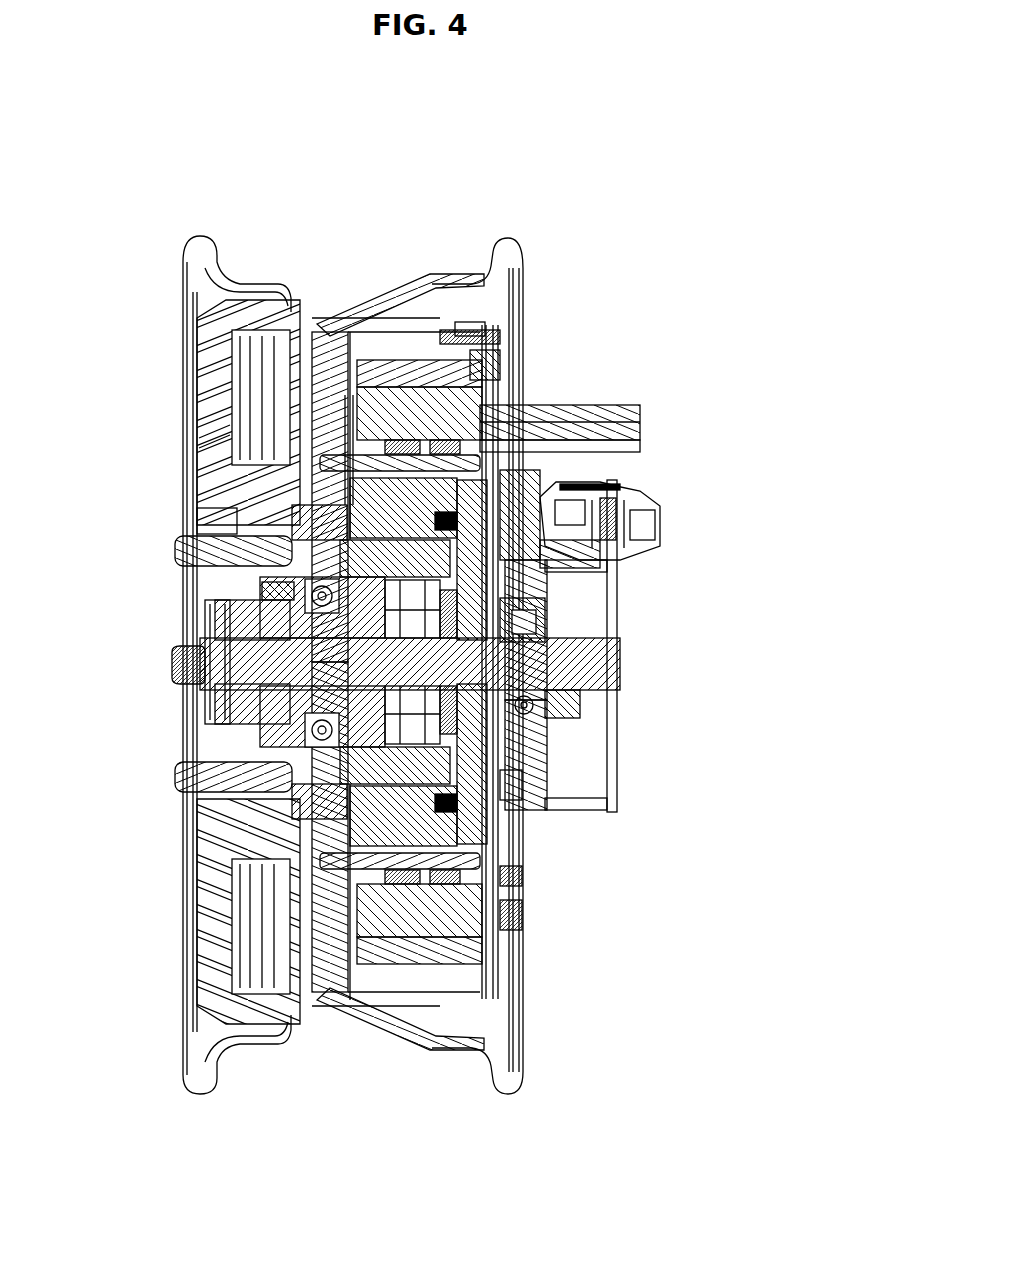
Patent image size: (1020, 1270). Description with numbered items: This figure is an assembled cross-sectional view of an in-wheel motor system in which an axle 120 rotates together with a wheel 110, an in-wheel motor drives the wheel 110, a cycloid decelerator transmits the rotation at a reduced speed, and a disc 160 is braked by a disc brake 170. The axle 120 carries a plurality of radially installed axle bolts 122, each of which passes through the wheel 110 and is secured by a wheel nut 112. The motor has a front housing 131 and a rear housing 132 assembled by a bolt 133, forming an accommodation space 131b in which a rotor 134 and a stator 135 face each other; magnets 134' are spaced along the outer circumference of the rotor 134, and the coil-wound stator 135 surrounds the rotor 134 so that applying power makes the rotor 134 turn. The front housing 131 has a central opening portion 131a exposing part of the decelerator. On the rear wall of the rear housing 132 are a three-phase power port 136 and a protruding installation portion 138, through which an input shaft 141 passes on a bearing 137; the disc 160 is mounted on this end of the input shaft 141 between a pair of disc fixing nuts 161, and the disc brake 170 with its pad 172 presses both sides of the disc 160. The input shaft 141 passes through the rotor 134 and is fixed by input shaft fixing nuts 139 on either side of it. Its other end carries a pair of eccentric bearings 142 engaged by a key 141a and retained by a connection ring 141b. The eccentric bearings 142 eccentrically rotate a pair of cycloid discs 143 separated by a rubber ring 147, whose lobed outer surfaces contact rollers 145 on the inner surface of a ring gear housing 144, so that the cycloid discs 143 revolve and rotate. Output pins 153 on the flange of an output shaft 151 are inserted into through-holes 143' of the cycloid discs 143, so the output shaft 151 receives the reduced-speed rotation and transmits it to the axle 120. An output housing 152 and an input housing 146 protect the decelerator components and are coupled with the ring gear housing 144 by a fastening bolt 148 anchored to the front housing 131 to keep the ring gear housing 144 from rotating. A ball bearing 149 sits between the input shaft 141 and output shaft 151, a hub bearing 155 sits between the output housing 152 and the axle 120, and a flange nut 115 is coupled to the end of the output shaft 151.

The wheel 110 is at (217, 350).
The wheel nut 112 is at (195, 530).
The flange nut 115 is at (290, 695).
The axle 120 is at (245, 625).
The axle bolt 122 is at (190, 553).
The front housing 131 is at (362, 332).
The opening portion 131a is at (217, 432).
The accommodation space 131b is at (468, 335).
The rear housing 132 is at (507, 363).
The bolt 133 is at (505, 333).
The rotor 134 is at (336, 369).
The magnet 134' is at (419, 307).
The stator 135 is at (415, 345).
The three-phase power port 136 is at (597, 413).
The bearing 137 is at (548, 708).
The installation portion 138 is at (548, 750).
The input shaft fixing nut 139 is at (521, 780).
The input shaft 141 is at (620, 662).
The key 141a is at (538, 618).
The connection ring 141b is at (315, 728).
The eccentric bearing 142 is at (445, 643).
The cycloid disc 143 is at (538, 952).
The through-hole 143' is at (563, 899).
The ring gear housing 144 is at (400, 890).
The roller 145 is at (440, 465).
The input housing 146 is at (520, 505).
The rubber ring 147 is at (590, 560).
The fastening bolt 148 is at (600, 437).
The ball bearing 149 is at (300, 582).
The output shaft 151 is at (185, 668).
The output housing 152 is at (312, 800).
The output pin 153 is at (305, 528).
The hub bearing 155 is at (260, 785).
The disc 160 is at (617, 797).
The disc fixing nut 161 is at (582, 714).
The disc brake 170 is at (662, 488).
The pad 172 is at (640, 520).